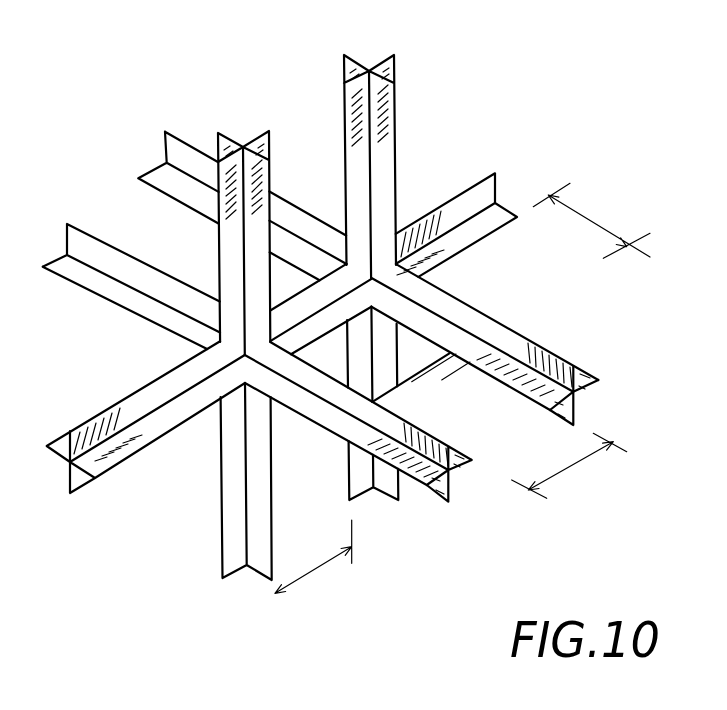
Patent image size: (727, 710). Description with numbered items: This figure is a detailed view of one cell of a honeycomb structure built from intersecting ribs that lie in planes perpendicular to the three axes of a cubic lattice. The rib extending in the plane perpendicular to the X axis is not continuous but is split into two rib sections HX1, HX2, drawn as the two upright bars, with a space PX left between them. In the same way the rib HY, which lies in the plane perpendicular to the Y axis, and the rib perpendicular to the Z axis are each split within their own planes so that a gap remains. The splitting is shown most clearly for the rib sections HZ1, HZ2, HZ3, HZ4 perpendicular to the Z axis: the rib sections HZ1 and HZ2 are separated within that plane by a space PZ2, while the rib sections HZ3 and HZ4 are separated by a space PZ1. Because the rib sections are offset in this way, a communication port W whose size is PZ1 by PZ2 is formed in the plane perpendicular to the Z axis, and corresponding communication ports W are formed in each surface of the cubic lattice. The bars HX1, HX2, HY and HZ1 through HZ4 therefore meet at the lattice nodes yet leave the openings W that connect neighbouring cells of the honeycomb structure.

The rib section HX1 is at (257, 131).
The rib section HX2 is at (370, 69).
The rib HY is at (389, 79).
The rib section HZ1 is at (465, 463).
The rib section HZ2 is at (592, 392).
The rib section HZ3 is at (319, 325).
The rib section HZ4 is at (432, 382).
The communication port W is at (282, 280).
The space PX is at (313, 570).
The space PZ1 is at (593, 220).
The space PZ2 is at (574, 470).